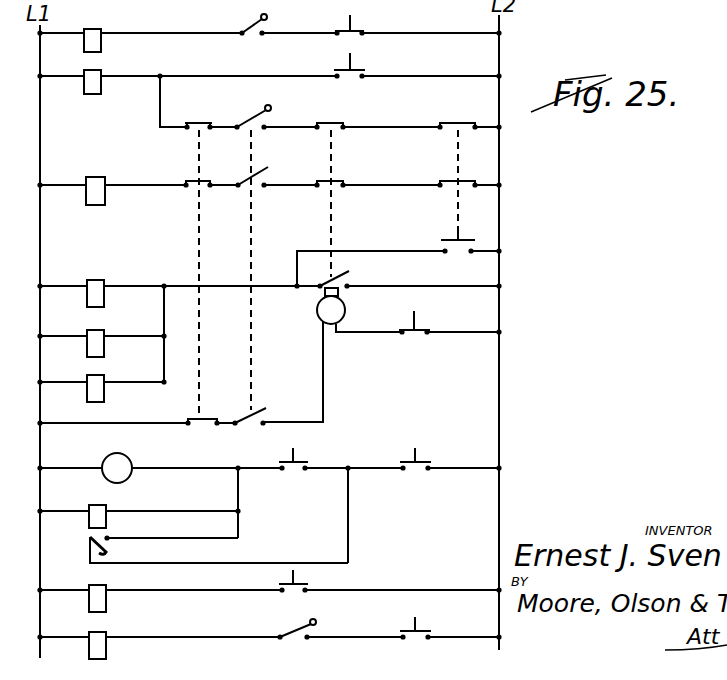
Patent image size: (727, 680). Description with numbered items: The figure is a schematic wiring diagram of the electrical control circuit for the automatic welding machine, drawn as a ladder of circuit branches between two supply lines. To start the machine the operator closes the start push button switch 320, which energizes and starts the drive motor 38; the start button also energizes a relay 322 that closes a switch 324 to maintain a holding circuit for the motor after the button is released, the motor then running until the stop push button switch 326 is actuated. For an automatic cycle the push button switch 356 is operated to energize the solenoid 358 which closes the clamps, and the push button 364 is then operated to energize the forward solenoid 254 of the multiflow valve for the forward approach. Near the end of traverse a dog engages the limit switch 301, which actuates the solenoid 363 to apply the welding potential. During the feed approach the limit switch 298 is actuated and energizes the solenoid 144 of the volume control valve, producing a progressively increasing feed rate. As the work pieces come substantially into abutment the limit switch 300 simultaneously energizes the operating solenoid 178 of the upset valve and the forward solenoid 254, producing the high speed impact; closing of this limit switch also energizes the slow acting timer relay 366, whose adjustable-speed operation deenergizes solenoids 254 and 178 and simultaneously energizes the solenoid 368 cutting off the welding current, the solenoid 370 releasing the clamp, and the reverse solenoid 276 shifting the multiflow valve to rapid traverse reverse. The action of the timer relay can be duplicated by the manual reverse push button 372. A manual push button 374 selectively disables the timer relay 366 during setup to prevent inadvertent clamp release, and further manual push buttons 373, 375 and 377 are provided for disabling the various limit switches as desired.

The solenoid of the volume control valve 144 is at (96, 32).
The forward solenoid of the multiflow valve 254 is at (95, 73).
The operating solenoid of the upset valve 178 is at (98, 184).
The manual push button 377 is at (199, 117).
The limit switch 300 is at (253, 114).
The limit switch 298 is at (246, 38).
The manual push button 373 is at (352, 18).
The push button 364 is at (355, 66).
The manual reverse push button 372 is at (457, 143).
The reverse solenoid of the multiflow valve 276 is at (98, 281).
The solenoid 370 is at (99, 334).
The solenoid 368 is at (99, 378).
The timer relay 366 is at (317, 315).
The manual push button 374 is at (427, 327).
The drive motor 38 is at (124, 462).
The push button switch 320 is at (300, 461).
The stop push button switch 326 is at (420, 461).
The relay 322 is at (105, 507).
The switch 324 is at (109, 554).
The push button switch 356 is at (308, 576).
The solenoid 358 is at (104, 588).
The solenoid 363 is at (99, 643).
The limit switch 301 is at (298, 621).
The manual push button 375 is at (419, 618).